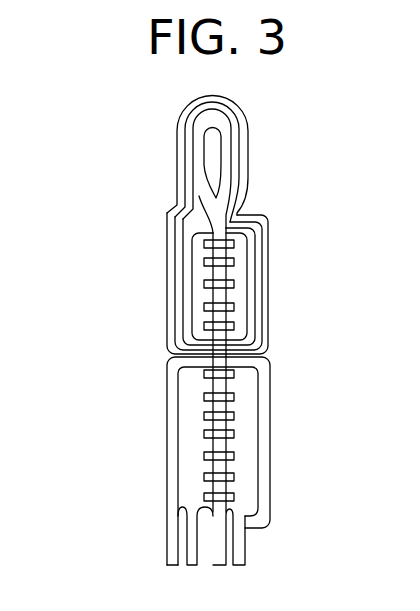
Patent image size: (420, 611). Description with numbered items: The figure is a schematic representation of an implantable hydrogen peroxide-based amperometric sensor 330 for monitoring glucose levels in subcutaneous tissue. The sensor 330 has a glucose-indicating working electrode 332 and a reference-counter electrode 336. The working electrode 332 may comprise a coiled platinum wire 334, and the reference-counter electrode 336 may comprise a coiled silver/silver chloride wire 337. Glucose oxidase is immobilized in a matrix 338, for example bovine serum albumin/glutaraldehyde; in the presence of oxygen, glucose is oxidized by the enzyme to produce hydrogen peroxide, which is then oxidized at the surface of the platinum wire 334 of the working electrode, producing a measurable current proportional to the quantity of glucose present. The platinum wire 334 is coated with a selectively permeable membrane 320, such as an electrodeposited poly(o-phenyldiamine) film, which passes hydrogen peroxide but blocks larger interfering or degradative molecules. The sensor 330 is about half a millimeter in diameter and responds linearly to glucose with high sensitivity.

The sensor 330 is at (118, 447).
The selectively permeable membrane 320 is at (268, 238).
The working electrode 332 is at (235, 284).
The coiled platinum wire 334 is at (254, 313).
The reference-counter electrode 336 is at (262, 440).
The coiled silver/silver chloride wire 337 is at (238, 477).
The matrix 338 is at (249, 183).